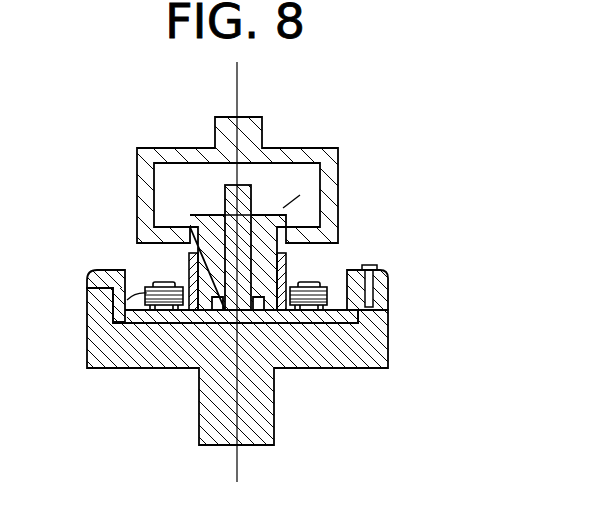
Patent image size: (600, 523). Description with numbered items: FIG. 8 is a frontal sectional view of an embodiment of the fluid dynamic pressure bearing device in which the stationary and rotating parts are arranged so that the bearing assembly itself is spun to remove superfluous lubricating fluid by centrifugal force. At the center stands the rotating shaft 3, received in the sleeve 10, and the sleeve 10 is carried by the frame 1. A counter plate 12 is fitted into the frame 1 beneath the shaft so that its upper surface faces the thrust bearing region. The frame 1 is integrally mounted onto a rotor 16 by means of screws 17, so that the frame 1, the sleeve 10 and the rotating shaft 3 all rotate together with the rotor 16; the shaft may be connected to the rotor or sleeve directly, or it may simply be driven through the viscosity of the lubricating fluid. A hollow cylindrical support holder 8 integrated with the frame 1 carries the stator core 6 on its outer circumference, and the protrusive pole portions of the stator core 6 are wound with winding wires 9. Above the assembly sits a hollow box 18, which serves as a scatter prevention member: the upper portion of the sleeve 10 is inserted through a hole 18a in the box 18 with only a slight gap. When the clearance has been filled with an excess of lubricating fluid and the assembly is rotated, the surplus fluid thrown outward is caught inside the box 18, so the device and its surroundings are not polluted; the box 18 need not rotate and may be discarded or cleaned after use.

The frame 1 is at (358, 270).
The rotating shaft 3 is at (224, 203).
The stator core 6 is at (117, 322).
The support holder 8 is at (190, 262).
The winding wires 9 is at (157, 283).
The sleeve 10 is at (206, 218).
The counter plate 12 is at (190, 318).
The rotor 16 is at (388, 342).
The screws 17 is at (377, 268).
The box 18 is at (282, 152).
The hole 18a is at (283, 208).